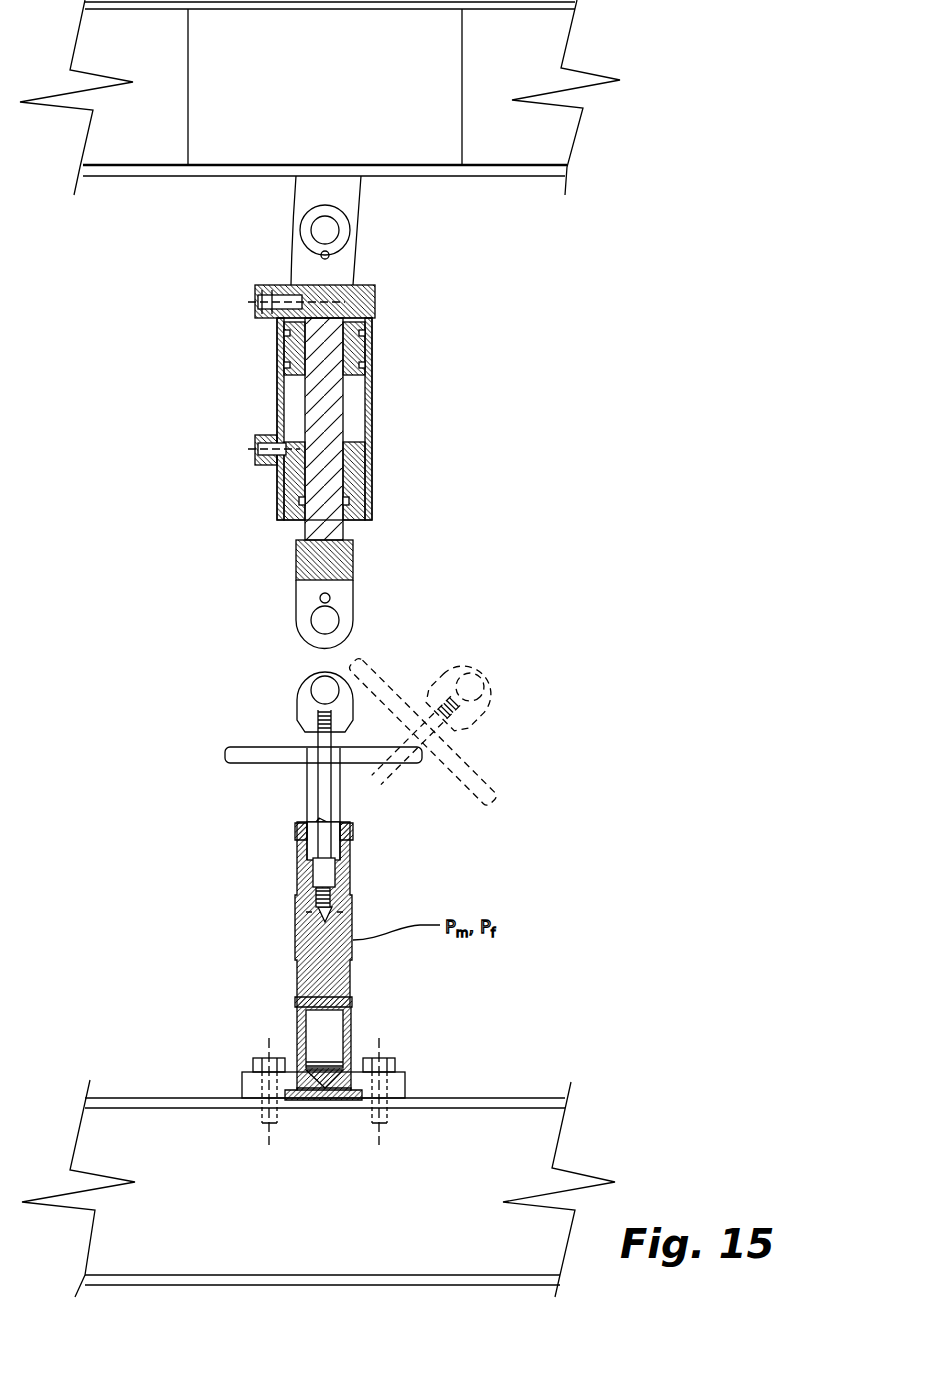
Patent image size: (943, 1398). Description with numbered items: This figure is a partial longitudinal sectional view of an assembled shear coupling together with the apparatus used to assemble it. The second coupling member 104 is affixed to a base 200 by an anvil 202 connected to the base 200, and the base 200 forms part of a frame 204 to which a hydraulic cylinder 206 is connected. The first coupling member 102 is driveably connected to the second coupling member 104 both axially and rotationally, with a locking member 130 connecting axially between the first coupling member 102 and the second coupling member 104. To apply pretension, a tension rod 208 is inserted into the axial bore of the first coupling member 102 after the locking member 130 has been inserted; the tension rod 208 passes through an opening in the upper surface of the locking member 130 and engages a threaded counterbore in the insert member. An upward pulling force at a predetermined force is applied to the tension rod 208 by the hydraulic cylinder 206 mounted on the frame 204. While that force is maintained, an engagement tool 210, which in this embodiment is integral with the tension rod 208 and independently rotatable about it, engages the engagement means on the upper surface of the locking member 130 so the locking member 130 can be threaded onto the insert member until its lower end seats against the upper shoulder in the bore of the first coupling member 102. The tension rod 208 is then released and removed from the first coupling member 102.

The frame 204 is at (500, 177).
The hydraulic cylinder 206 is at (375, 448).
The tension rod 208 is at (310, 740).
The engagement tool 210 is at (307, 782).
The locking member 130 is at (298, 872).
The first coupling member 102 is at (298, 913).
The second coupling member 104 is at (352, 990).
The anvil 202 is at (355, 1040).
The base 200 is at (530, 1098).